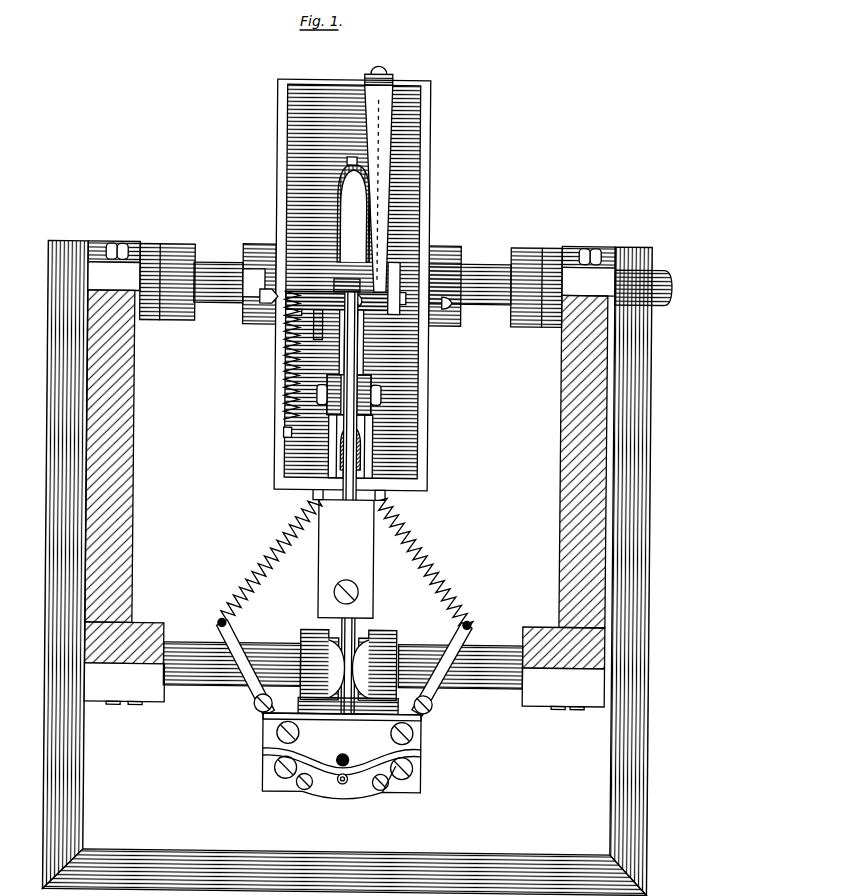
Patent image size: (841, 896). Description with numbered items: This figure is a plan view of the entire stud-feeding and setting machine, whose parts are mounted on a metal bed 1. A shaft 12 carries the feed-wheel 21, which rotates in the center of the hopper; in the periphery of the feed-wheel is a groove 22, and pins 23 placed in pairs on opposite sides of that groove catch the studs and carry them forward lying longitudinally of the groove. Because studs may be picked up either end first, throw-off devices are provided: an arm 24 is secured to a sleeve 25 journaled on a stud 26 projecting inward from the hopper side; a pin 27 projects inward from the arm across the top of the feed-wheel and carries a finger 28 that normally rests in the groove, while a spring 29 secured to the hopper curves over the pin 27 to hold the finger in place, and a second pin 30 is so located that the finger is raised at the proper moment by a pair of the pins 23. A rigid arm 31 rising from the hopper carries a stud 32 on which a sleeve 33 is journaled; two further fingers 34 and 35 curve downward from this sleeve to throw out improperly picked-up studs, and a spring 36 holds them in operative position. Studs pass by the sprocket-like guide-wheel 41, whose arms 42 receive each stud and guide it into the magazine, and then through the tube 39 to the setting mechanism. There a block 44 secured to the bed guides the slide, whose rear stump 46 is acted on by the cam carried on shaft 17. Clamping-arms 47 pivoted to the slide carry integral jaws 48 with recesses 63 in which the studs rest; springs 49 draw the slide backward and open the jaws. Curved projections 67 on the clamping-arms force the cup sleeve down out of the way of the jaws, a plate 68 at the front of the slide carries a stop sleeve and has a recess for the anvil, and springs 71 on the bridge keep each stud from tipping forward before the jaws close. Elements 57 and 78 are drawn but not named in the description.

The bed 1 is at (347, 567).
The shaft 12 is at (672, 284).
The shaft 17 is at (430, 660).
The feed-wheel 21 is at (344, 215).
The groove 22 is at (362, 92).
The pins 23 is at (333, 96).
The arm 24 is at (396, 262).
The sleeve 25 is at (396, 318).
The stud 26 is at (447, 306).
The pin 27 is at (330, 294).
The finger 28 is at (334, 282).
The spring 29 is at (381, 204).
The pin 30 is at (372, 318).
The rigid arm 31 is at (288, 316).
The stud 32 is at (258, 299).
The sleeve 33 is at (296, 342).
The finger 34 is at (300, 370).
The finger 35 is at (380, 312).
The spring 36 is at (284, 408).
The tube 39 is at (362, 546).
The guide-wheel 41 is at (376, 396).
The arms or sprockets 42 is at (374, 426).
The block 44 is at (418, 771).
The stump 46 is at (298, 720).
The clamping-arms 47 is at (430, 692).
The jaws 48 is at (350, 779).
The springs 49 is at (434, 548).
The screw 57 is at (262, 707).
The recesses 63 is at (312, 668).
The curved projections 67 is at (342, 748).
The plate 68 is at (392, 782).
The springs 71 is at (352, 766).
The collar 78 is at (348, 705).